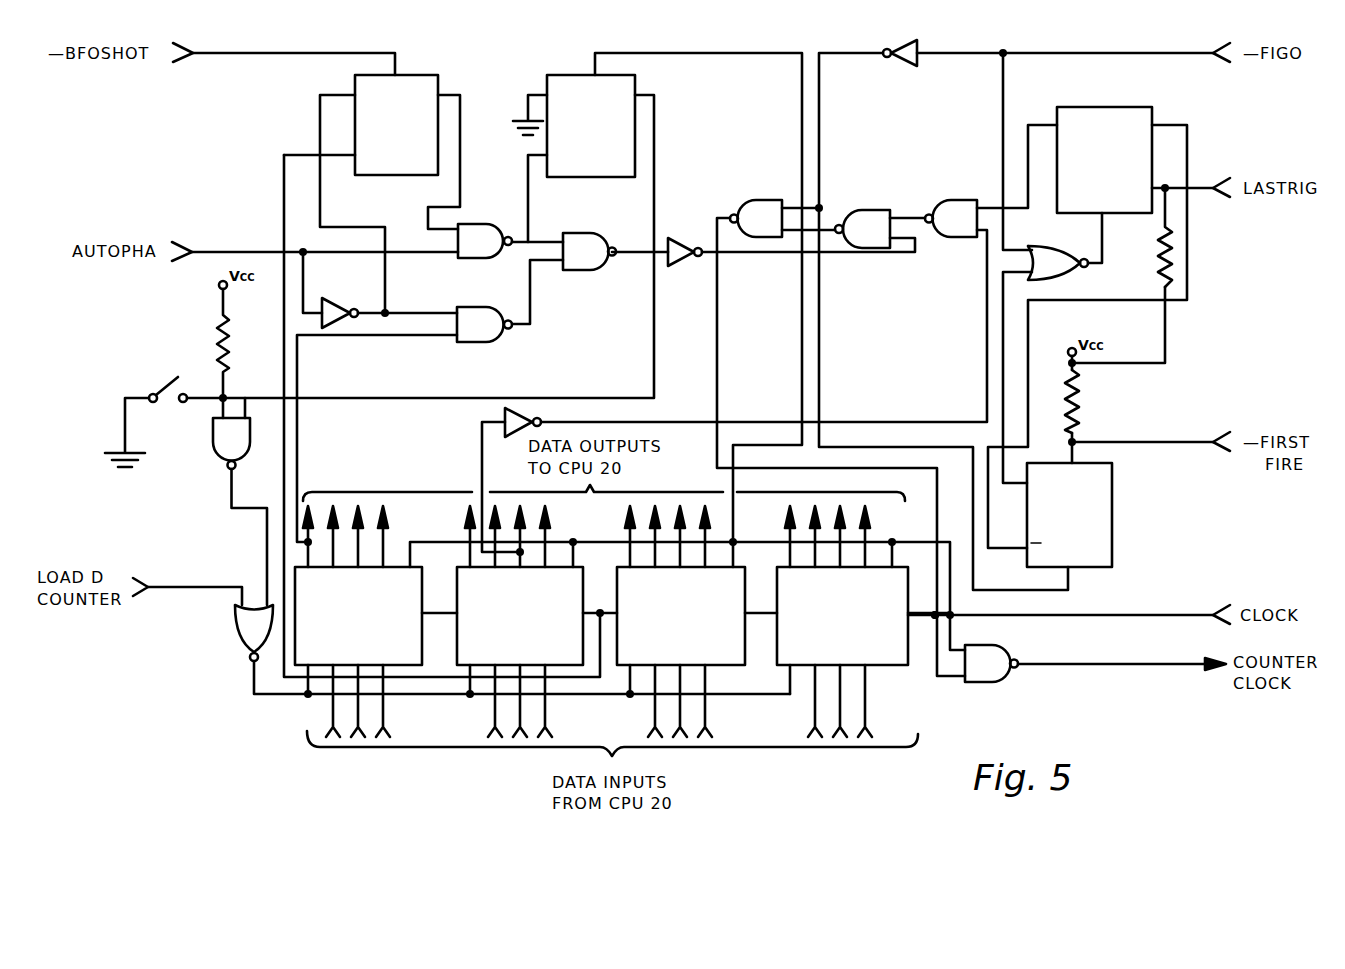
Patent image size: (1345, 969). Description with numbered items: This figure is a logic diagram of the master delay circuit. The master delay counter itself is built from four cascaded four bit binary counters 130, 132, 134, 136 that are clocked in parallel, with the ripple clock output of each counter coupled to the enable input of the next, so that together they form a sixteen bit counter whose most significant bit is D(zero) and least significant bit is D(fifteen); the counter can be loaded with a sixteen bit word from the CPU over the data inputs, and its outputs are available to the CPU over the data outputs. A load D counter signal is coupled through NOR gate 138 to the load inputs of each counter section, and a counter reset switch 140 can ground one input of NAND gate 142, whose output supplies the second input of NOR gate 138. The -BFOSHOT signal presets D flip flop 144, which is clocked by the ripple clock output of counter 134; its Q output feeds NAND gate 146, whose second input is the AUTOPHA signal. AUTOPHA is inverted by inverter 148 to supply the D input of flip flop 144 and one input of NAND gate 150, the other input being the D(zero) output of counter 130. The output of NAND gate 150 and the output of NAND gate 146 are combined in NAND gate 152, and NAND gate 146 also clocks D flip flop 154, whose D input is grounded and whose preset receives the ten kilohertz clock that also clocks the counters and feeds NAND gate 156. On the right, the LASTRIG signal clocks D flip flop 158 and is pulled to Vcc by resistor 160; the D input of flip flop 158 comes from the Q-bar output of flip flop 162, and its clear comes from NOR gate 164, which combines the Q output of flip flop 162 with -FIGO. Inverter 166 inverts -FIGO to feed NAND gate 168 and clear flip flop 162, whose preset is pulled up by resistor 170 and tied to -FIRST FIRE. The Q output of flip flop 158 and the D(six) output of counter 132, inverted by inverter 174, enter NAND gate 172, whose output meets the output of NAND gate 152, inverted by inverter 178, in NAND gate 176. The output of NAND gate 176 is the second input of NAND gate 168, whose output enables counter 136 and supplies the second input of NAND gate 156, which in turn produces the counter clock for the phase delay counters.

The four bit binary counter 130 is at (340, 597).
The four bit binary counter 132 is at (502, 597).
The four bit binary counter 134 is at (662, 597).
The four bit binary counter 136 is at (822, 597).
The NOR gate 138 is at (238, 621).
The counter reset switch 140 is at (178, 377).
The NAND gate 142 is at (216, 438).
The D flip flop 144 is at (417, 82).
The NAND gate 146 is at (482, 230).
The inverter 148 is at (332, 302).
The NAND gate 150 is at (475, 310).
The NAND gate 152 is at (575, 238).
The D flip flop 154 is at (570, 85).
The NAND gate 156 is at (996, 652).
The D flip flop 158 is at (1080, 120).
The resistor 160 is at (1160, 241).
The D flip flop 162 is at (1105, 497).
The NOR gate 164 is at (1050, 256).
The inverter 166 is at (920, 45).
The NAND gate 168 is at (764, 207).
The resistor 170 is at (1080, 388).
The NAND gate 172 is at (955, 210).
The inverter 174 is at (506, 415).
The NAND gate 176 is at (870, 220).
The inverter 178 is at (680, 240).